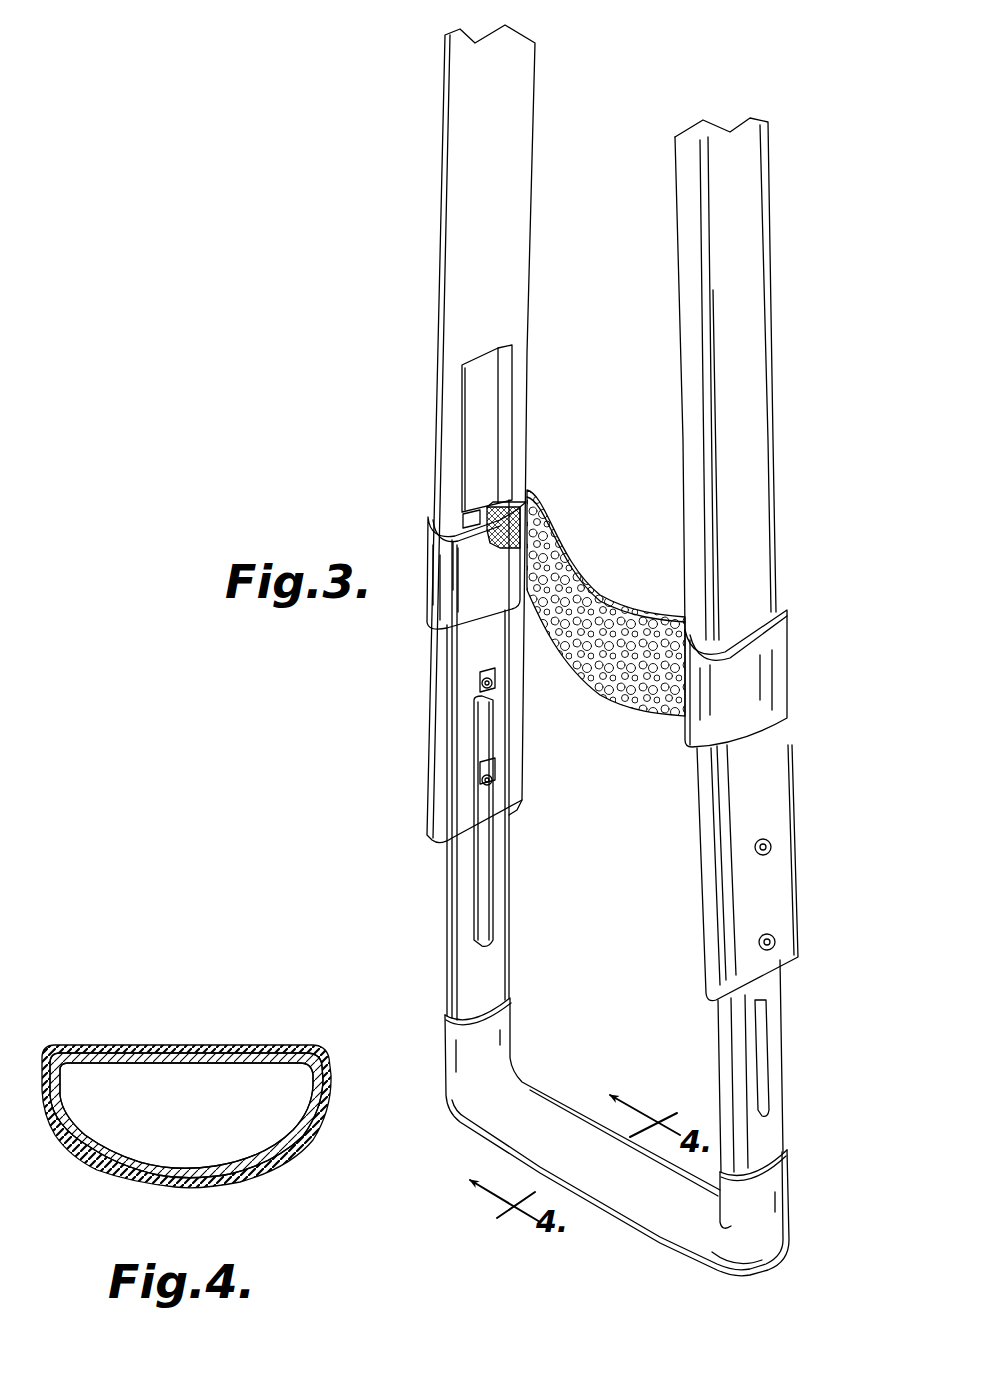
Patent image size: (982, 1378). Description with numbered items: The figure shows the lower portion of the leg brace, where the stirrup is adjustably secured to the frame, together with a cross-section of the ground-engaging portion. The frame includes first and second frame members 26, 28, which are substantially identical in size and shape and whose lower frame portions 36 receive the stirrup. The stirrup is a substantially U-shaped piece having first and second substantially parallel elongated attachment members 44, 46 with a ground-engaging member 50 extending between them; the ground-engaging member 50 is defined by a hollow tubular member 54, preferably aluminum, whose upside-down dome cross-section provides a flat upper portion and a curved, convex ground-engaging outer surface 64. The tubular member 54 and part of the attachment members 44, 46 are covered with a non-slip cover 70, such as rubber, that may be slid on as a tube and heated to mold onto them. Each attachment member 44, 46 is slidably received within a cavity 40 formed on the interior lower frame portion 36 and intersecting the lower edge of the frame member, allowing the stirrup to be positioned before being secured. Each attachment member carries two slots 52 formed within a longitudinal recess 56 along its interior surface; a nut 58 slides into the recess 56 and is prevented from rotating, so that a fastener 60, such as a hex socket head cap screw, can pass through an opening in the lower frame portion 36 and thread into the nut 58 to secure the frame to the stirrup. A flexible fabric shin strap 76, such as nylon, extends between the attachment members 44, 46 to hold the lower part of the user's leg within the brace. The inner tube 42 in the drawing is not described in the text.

In FIG. 3, the first frame member 26 is at (432, 120).
In FIG. 3, the second frame member 28 is at (786, 250).
In FIG. 3, the lower frame portion 36 is at (460, 318).
In FIG. 3, the cavity 40 is at (480, 430).
In FIG. 3, the second inner tube 42 is at (788, 1095).
In FIG. 3, the first elongated attachment member 44 is at (452, 920).
In FIG. 3, the second elongated attachment member 46 is at (780, 1040).
In FIG. 3, the ground-engaging member 50 is at (657, 1156).
In FIG. 3, the slot 52 is at (490, 650).
In FIG. 3, the tubular member 54 is at (768, 1255).
In FIG. 4, the tubular member 54 is at (135, 1058).
In FIG. 3, the longitudinal recess 56 is at (495, 740).
In FIG. 3, the nut 58 is at (487, 688).
In FIG. 3, the fastener 60 is at (492, 687).
In FIG. 4, the ground-engaging outer surface 64 is at (210, 1186).
In FIG. 3, the non-slip cover 70 is at (676, 1240).
In FIG. 4, the non-slip cover 70 is at (195, 1046).
In FIG. 3, the shin strap 76 is at (617, 570).